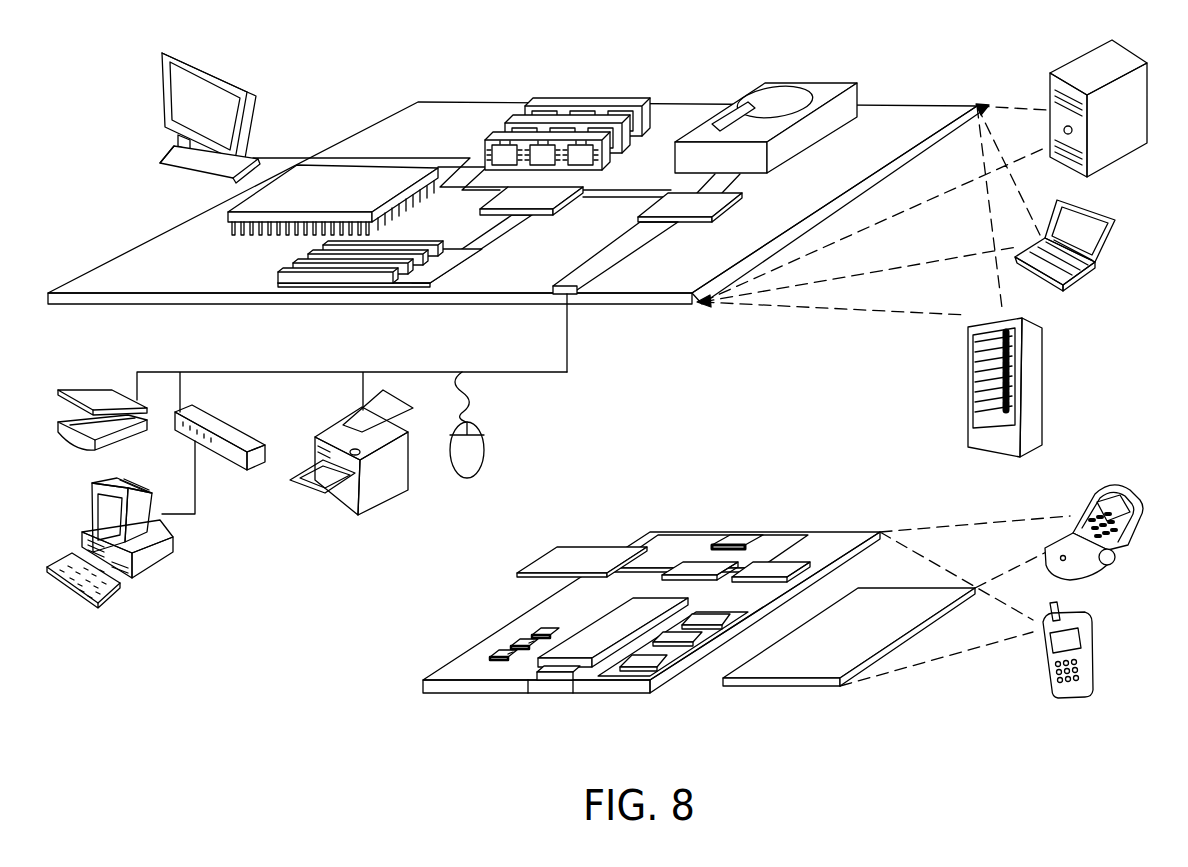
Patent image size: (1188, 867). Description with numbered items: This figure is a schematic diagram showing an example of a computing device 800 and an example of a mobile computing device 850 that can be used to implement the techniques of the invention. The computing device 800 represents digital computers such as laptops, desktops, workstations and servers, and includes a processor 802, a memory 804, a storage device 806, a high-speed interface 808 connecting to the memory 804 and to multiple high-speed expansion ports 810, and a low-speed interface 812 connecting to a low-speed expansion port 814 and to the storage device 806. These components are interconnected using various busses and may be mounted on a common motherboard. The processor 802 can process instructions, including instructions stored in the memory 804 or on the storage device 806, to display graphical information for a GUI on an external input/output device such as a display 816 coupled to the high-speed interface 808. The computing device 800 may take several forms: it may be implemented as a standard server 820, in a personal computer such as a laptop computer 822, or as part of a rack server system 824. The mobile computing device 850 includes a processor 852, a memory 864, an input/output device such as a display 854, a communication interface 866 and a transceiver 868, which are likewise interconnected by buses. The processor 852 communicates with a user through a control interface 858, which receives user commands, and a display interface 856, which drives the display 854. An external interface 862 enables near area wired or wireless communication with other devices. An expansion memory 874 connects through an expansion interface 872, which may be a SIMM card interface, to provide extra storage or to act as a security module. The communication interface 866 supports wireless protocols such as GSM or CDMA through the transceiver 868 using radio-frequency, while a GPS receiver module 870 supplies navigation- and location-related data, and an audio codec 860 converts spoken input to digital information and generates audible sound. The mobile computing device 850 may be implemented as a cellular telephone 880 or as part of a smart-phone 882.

The computing device 800 is at (347, 75).
The processor 802 is at (228, 213).
The memory 804 is at (528, 98).
The storage device 806 is at (754, 84).
The high-speed interface 808 is at (507, 197).
The high-speed expansion ports 810 is at (293, 266).
The low-speed interface 812 is at (673, 203).
The low-speed expansion port 814 is at (598, 300).
The display 816 is at (162, 55).
The standard server 820 is at (1050, 90).
The laptop computer 822 is at (1108, 200).
The rack server system 824 is at (968, 412).
The mobile computing device 850 is at (397, 690).
The processor 852 is at (588, 655).
The display 854 is at (808, 670).
The display interface 856 is at (668, 672).
The control interface 858 is at (683, 645).
The audio codec 860 is at (703, 625).
The external interface 862 is at (556, 682).
The memory 864 is at (498, 645).
The communication interface 866 is at (698, 567).
The transceiver 868 is at (773, 567).
The GPS receiver module 870 is at (747, 532).
The expansion interface 872 is at (628, 542).
The expansion memory 874 is at (557, 545).
The cellular telephone 880 is at (1100, 498).
The smart-phone 882 is at (1043, 660).